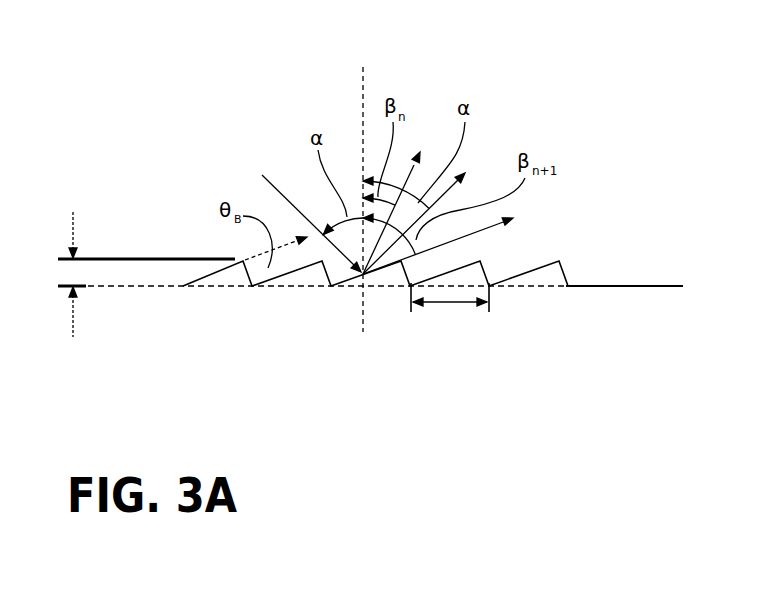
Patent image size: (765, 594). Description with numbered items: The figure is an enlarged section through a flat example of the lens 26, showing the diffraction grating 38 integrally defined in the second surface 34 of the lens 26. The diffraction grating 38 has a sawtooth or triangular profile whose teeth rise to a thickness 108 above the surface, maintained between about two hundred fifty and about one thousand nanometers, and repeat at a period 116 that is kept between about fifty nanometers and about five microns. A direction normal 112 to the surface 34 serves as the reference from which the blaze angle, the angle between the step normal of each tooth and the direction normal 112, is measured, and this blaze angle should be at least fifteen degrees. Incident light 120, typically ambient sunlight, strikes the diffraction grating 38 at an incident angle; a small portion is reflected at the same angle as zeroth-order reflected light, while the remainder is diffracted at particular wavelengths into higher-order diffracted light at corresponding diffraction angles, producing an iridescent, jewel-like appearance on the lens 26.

The lens 26 is at (607, 407).
The second surface 34 is at (632, 282).
The diffraction grating 38 is at (565, 343).
The thickness 108 is at (72, 229).
The direction normal 112 is at (362, 94).
The period 116 is at (437, 304).
The incident light 120 is at (413, 197).